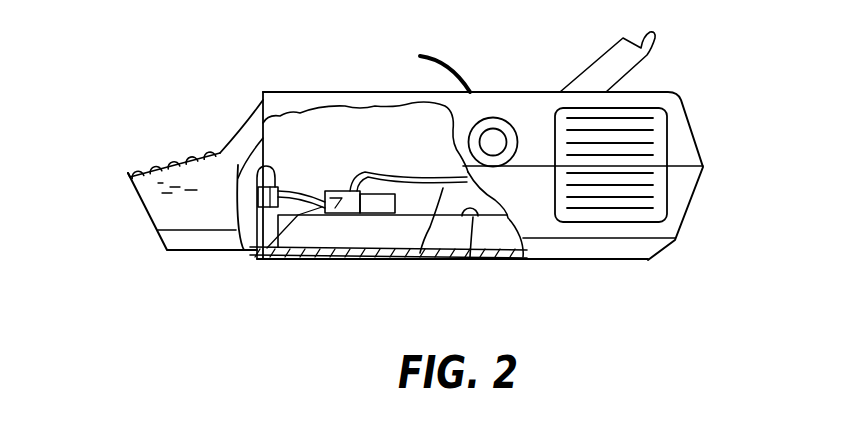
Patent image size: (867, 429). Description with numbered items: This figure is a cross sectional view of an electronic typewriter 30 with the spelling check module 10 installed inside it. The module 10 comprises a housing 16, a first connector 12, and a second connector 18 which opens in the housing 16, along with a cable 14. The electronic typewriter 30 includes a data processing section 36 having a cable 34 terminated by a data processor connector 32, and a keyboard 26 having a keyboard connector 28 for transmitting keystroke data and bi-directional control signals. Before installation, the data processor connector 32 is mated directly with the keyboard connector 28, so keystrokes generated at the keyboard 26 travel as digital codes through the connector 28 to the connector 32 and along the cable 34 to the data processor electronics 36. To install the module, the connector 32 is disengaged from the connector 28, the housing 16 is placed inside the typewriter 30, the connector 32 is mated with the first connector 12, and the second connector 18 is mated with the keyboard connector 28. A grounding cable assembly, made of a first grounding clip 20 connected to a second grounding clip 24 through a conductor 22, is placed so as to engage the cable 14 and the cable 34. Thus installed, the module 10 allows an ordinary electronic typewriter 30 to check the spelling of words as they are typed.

The spelling check module 10 is at (405, 164).
The first connector 12 is at (322, 221).
The cable 14 is at (263, 255).
The housing 16 is at (333, 215).
The second connector 18 is at (252, 160).
The first grounding clip 20 is at (287, 188).
The conductor 22 is at (356, 167).
The second grounding clip 24 is at (377, 168).
The keyboard 26 is at (158, 170).
The keyboard connector 28 is at (240, 197).
The electronic typewriter 30 is at (178, 121).
The data processor connector 32 is at (348, 211).
The cable 34 is at (420, 253).
The data processing section 36 is at (470, 257).